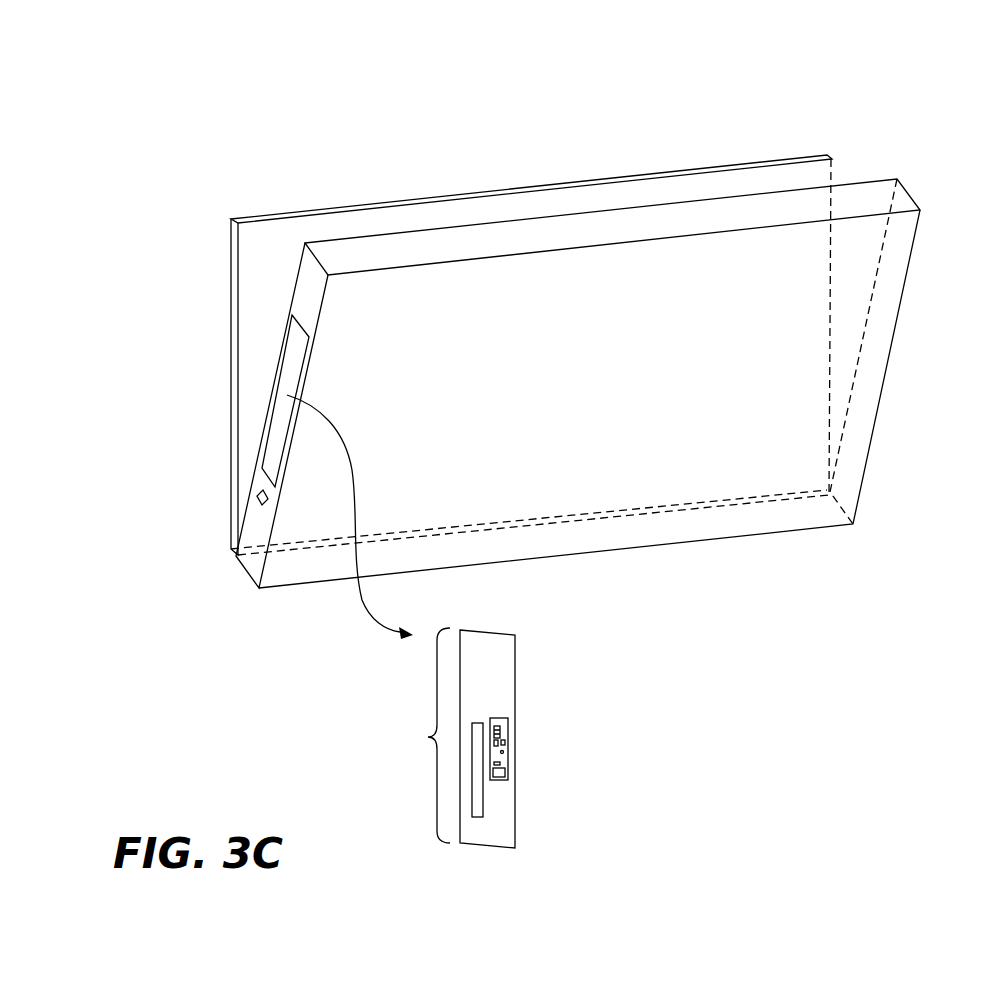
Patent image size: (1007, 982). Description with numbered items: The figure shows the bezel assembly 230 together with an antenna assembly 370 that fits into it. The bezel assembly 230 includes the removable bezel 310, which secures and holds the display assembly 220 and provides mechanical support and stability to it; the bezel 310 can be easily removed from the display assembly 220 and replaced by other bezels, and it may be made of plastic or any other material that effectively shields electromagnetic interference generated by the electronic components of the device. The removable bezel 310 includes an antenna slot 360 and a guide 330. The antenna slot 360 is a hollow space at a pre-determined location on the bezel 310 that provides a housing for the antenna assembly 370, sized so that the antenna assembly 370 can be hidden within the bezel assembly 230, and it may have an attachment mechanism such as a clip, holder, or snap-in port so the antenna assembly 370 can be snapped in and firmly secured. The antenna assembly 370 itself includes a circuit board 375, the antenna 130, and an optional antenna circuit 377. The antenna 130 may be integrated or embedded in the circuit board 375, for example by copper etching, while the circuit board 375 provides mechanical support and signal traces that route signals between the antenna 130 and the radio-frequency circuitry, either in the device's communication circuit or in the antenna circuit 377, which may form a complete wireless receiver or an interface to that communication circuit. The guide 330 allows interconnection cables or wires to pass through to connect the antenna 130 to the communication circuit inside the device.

The bezel assembly 230 is at (908, 82).
The display assembly 220 is at (458, 198).
The removable bezel 310 is at (892, 272).
The antenna slot 360 is at (282, 416).
The guide 330 is at (257, 500).
The antenna assembly 370 is at (474, 734).
The circuit board 375 is at (487, 638).
The antenna circuit 377 is at (508, 731).
The antenna 130 is at (478, 792).